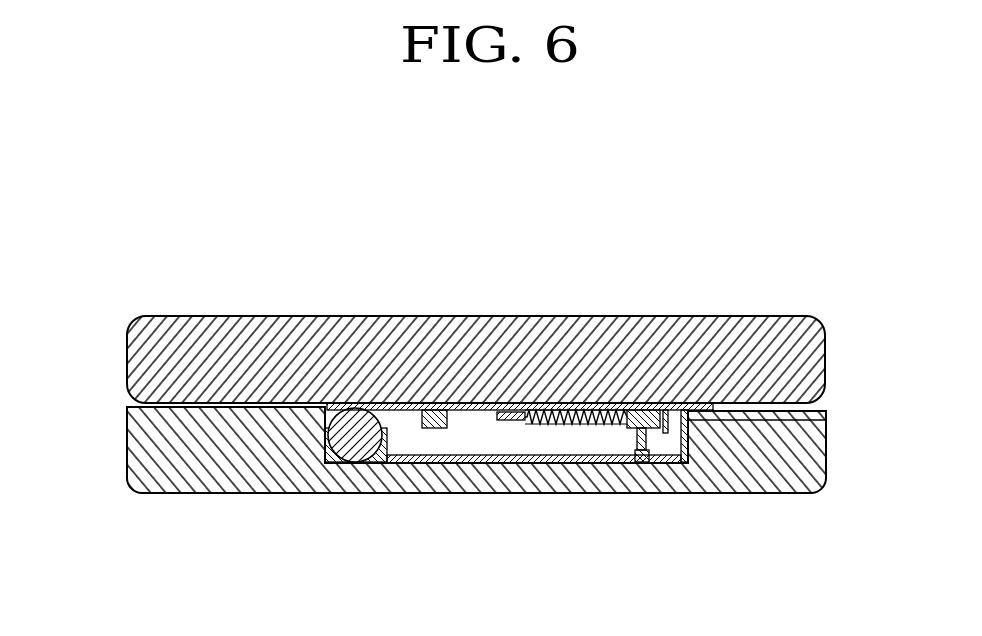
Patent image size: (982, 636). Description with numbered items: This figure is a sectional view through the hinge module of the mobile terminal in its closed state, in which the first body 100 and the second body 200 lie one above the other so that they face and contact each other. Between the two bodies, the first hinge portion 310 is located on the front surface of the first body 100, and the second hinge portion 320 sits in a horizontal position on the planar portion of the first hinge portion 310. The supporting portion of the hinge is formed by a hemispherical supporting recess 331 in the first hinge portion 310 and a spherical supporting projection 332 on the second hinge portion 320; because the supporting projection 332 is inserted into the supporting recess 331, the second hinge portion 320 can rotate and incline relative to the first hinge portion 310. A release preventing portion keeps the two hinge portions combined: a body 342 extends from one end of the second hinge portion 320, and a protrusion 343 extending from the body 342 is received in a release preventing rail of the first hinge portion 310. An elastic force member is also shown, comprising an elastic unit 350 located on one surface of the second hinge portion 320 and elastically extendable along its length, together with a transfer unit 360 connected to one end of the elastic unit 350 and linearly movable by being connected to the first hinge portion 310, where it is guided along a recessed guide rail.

The second body 200 is at (135, 362).
The first body 100 is at (135, 450).
The first hinge portion 310 is at (611, 463).
The second hinge portion 320 is at (653, 406).
The supporting recess 331 is at (378, 463).
The supporting projection 332 is at (357, 428).
The body 342 is at (763, 422).
The protrusion 343 is at (688, 433).
The elastic unit 350 is at (527, 446).
The transfer unit 360 is at (660, 445).